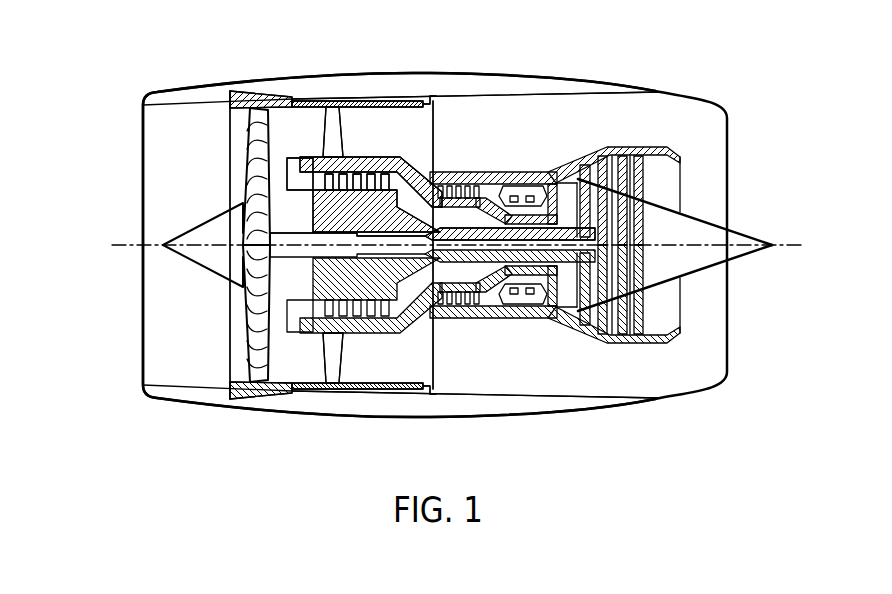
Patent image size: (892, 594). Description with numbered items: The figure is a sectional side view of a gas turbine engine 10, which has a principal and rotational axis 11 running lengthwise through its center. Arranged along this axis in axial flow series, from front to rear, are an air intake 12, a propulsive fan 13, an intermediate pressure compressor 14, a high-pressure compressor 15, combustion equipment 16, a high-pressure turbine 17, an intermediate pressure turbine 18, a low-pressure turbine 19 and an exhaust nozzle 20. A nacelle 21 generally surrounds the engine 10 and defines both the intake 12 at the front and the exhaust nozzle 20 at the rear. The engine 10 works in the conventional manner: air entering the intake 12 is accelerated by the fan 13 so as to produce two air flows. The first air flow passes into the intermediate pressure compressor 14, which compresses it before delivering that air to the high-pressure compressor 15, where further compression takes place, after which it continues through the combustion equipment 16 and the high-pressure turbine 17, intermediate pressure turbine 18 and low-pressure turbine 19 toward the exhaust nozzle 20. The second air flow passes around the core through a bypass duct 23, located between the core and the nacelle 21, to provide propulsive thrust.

The gas turbine engine 10 is at (108, 128).
The principal and rotational axis 11 is at (153, 243).
The air intake 12 is at (193, 107).
The propulsive fan 13 is at (247, 340).
The intermediate pressure compressor 14 is at (365, 333).
The high-pressure compressor 15 is at (457, 190).
The combustion equipment 16 is at (513, 313).
The high-pressure turbine 17 is at (553, 317).
The intermediate pressure turbine 18 is at (587, 170).
The low-pressure turbine 19 is at (593, 333).
The exhaust nozzle 20 is at (727, 367).
The nacelle 21 is at (567, 73).
The bypass duct 23 is at (400, 144).